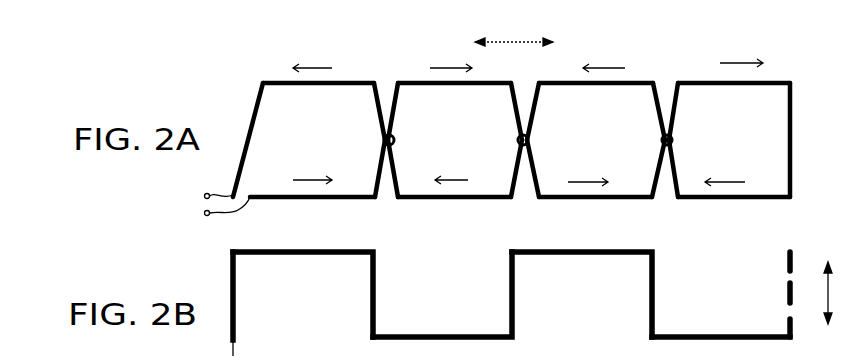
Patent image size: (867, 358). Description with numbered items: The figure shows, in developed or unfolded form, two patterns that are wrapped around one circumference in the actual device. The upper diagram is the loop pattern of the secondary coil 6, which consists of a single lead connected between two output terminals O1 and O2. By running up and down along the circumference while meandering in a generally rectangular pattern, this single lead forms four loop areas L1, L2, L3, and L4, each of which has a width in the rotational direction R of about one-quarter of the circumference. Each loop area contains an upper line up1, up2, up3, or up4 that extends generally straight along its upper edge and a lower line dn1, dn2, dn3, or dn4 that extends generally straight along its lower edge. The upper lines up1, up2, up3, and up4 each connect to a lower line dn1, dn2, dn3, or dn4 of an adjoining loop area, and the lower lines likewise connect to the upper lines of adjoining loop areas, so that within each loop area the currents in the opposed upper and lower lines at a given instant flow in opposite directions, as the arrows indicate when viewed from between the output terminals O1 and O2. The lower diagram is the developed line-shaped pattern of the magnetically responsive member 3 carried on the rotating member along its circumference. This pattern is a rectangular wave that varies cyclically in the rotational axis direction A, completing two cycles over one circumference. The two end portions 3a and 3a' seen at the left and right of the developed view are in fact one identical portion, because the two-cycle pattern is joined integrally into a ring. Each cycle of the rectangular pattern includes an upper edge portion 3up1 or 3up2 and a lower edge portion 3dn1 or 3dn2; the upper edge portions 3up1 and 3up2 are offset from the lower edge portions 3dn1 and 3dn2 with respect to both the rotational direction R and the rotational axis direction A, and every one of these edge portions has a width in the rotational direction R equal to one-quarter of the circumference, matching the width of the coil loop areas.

In FIG. 2A, the secondary coil 6 is at (258, 102).
In FIG. 2A, the loop area L1 is at (309, 114).
In FIG. 2A, the loop area L2 is at (455, 110).
In FIG. 2A, the loop area L3 is at (596, 110).
In FIG. 2A, the loop area L4 is at (723, 116).
In FIG. 2A, the upper line up1 is at (315, 88).
In FIG. 2A, the upper line up2 is at (482, 87).
In FIG. 2A, the upper line up3 is at (615, 87).
In FIG. 2A, the upper line up4 is at (750, 87).
In FIG. 2A, the lower line dn1 is at (353, 195).
In FIG. 2A, the lower line dn2 is at (488, 195).
In FIG. 2A, the lower line dn3 is at (623, 195).
In FIG. 2A, the lower line dn4 is at (760, 195).
In FIG. 2A, the output terminal O1 is at (211, 214).
In FIG. 2A, the output terminal O2 is at (202, 197).
In FIG. 2A, the rotational direction R is at (514, 33).
In FIG. 2B, the magnetically responsive member 3 is at (486, 287).
In FIG. 2B, the end portion 3a is at (207, 302).
In FIG. 2B, the end portion 3a' is at (756, 283).
In FIG. 2B, the upper edge portion 3up1 is at (308, 256).
In FIG. 2B, the lower edge portion 3dn1 is at (462, 333).
In FIG. 2B, the upper edge portion 3up2 is at (596, 256).
In FIG. 2B, the lower edge portion 3dn2 is at (712, 333).
In FIG. 2B, the rotational axis direction A is at (828, 279).